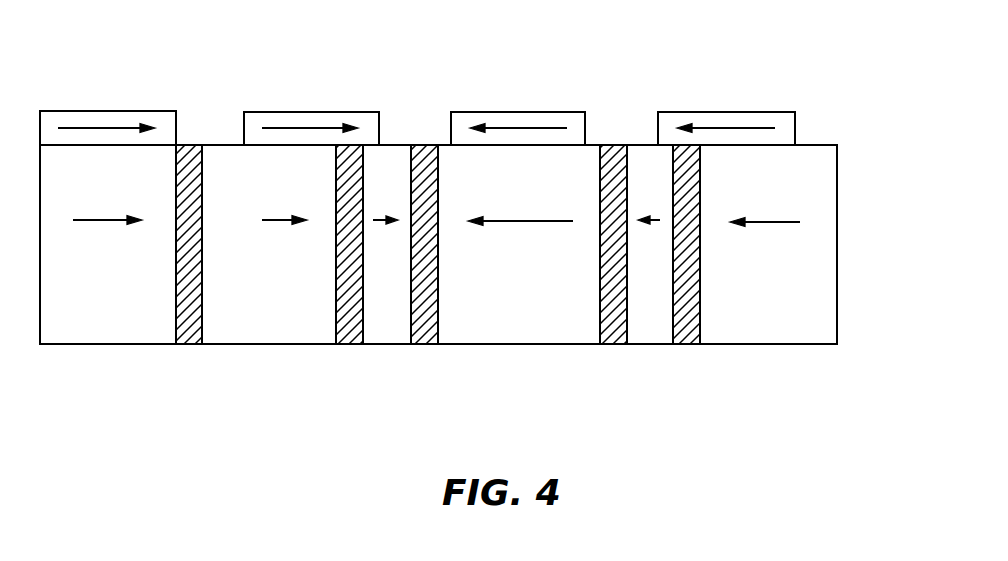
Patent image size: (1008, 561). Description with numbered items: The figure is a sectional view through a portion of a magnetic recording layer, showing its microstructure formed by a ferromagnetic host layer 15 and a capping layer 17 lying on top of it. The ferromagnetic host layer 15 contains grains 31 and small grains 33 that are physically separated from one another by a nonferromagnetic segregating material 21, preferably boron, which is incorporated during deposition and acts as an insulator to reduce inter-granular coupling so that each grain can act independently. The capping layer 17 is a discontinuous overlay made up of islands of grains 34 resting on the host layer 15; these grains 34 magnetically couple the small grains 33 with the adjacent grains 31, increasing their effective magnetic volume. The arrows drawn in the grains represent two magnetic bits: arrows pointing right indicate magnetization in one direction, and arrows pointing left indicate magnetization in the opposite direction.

The ferromagnetic host layer 15 is at (853, 146).
The capping layer 17 is at (853, 115).
The segregating material 21 is at (188, 143).
The grains 31 is at (98, 326).
The small grains 33 is at (387, 333).
The grains of the capping layer 34 is at (108, 110).